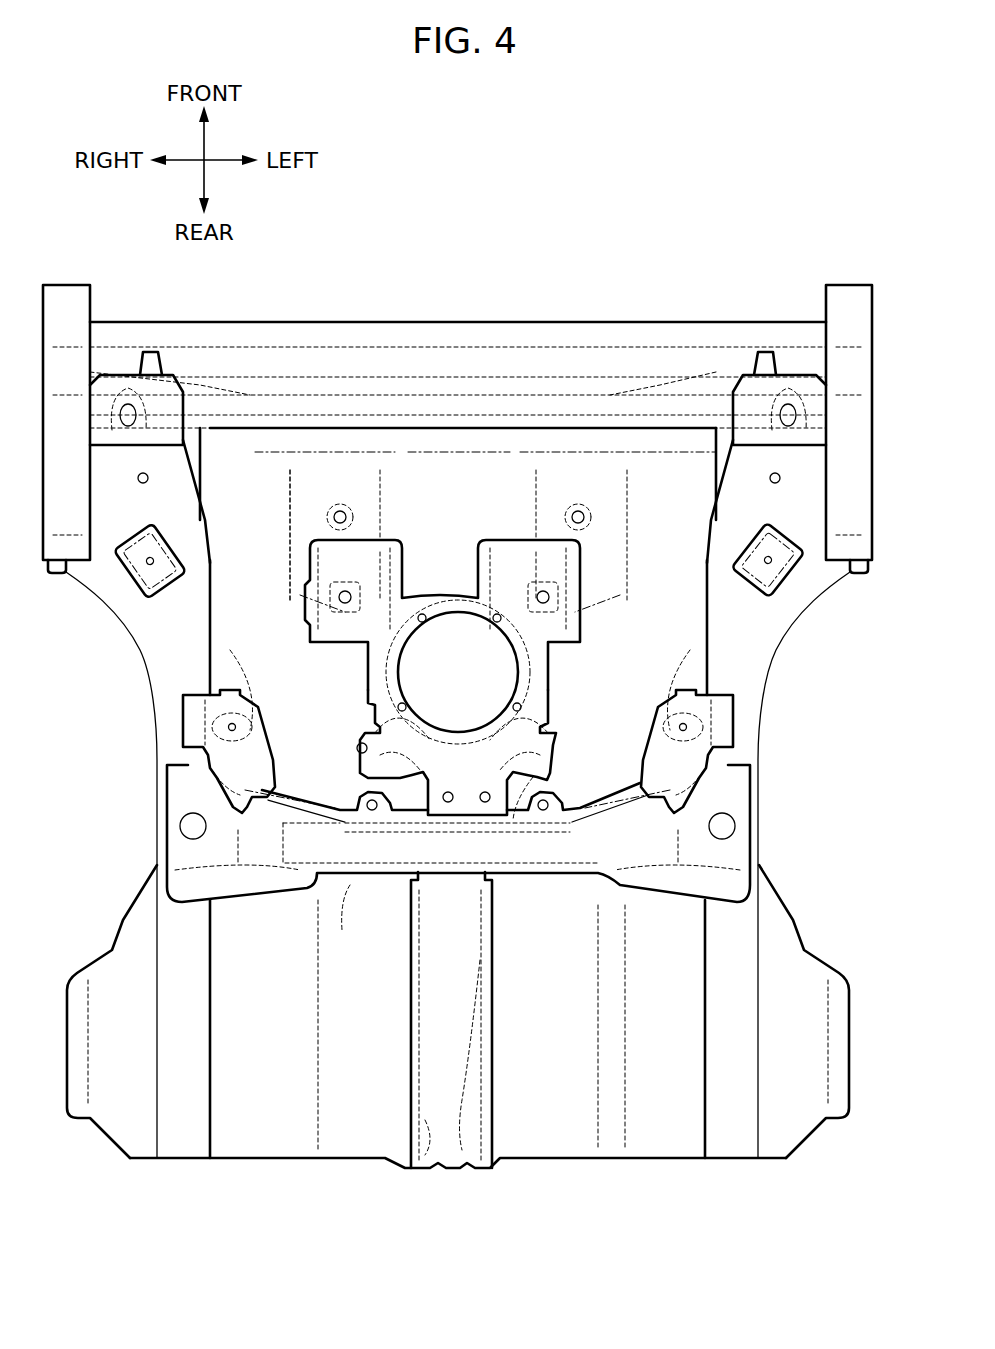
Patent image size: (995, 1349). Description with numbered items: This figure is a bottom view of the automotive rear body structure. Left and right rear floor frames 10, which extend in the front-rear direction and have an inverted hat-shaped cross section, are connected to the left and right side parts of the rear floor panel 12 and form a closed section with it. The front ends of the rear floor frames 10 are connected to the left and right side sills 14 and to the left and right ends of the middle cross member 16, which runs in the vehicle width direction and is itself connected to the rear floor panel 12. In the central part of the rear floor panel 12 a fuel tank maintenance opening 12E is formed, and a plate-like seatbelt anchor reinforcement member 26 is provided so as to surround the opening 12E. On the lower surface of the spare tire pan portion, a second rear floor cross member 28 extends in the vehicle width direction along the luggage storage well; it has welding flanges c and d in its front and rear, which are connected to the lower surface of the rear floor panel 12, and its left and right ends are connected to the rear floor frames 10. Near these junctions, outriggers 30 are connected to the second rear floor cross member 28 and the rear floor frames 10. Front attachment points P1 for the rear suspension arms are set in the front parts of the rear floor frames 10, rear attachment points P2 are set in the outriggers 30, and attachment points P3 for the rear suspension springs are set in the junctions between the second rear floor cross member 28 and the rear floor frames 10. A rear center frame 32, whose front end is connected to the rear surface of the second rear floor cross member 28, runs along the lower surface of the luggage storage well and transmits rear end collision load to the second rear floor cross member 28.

The rear floor frame 10 is at (173, 940).
The rear floor panel 12 is at (655, 1145).
The fuel tank maintenance opening 12E is at (456, 707).
The side sill 14 is at (72, 296).
The middle cross member 16 is at (523, 360).
The seatbelt anchor reinforcement member 26 is at (567, 577).
The second rear floor cross member 28 is at (540, 856).
The outrigger 30 is at (213, 708).
The rear center frame 32 is at (480, 1098).
The front attachment point for rear suspension arm P1 is at (148, 562).
The rear attachment point for rear suspension arm P2 is at (232, 727).
The attachment point for rear suspension spring P3 is at (192, 820).
The welding flange c is at (533, 777).
The welding flange d is at (358, 870).